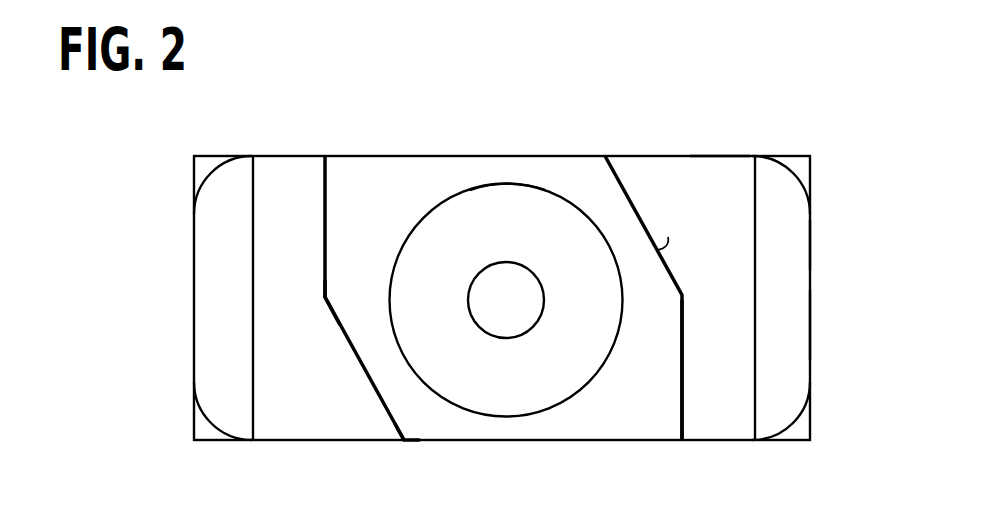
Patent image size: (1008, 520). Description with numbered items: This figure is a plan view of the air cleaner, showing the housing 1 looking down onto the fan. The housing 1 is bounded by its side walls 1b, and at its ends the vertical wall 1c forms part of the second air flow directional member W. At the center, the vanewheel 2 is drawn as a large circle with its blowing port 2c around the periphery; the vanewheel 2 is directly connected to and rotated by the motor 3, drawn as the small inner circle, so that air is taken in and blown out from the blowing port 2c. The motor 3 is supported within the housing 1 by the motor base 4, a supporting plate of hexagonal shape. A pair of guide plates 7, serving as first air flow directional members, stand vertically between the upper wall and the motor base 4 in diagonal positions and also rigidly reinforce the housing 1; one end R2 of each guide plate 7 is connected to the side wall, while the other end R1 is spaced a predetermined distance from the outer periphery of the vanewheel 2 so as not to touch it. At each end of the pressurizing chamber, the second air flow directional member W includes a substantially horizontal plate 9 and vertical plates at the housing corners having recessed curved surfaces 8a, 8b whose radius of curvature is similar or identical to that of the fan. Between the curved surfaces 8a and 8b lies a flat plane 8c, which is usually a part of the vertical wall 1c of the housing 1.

The housing 1 is at (703, 155).
The side wall 1b is at (733, 155).
The vertical wall 1c is at (811, 240).
The vanewheel 2 is at (438, 203).
The blowing port 2c is at (516, 183).
The motor 3 is at (510, 340).
The motor base 4 is at (652, 430).
The guide plate 7 is at (620, 186).
The curved surface 8a is at (218, 176).
The curved surface 8b is at (208, 420).
The flat plane 8c is at (810, 309).
The horizontal plate 9 is at (200, 294).
The second air flow directional member W is at (803, 342).
The other end of guide plate R1 is at (340, 362).
The one end of guide plate R2 is at (411, 441).